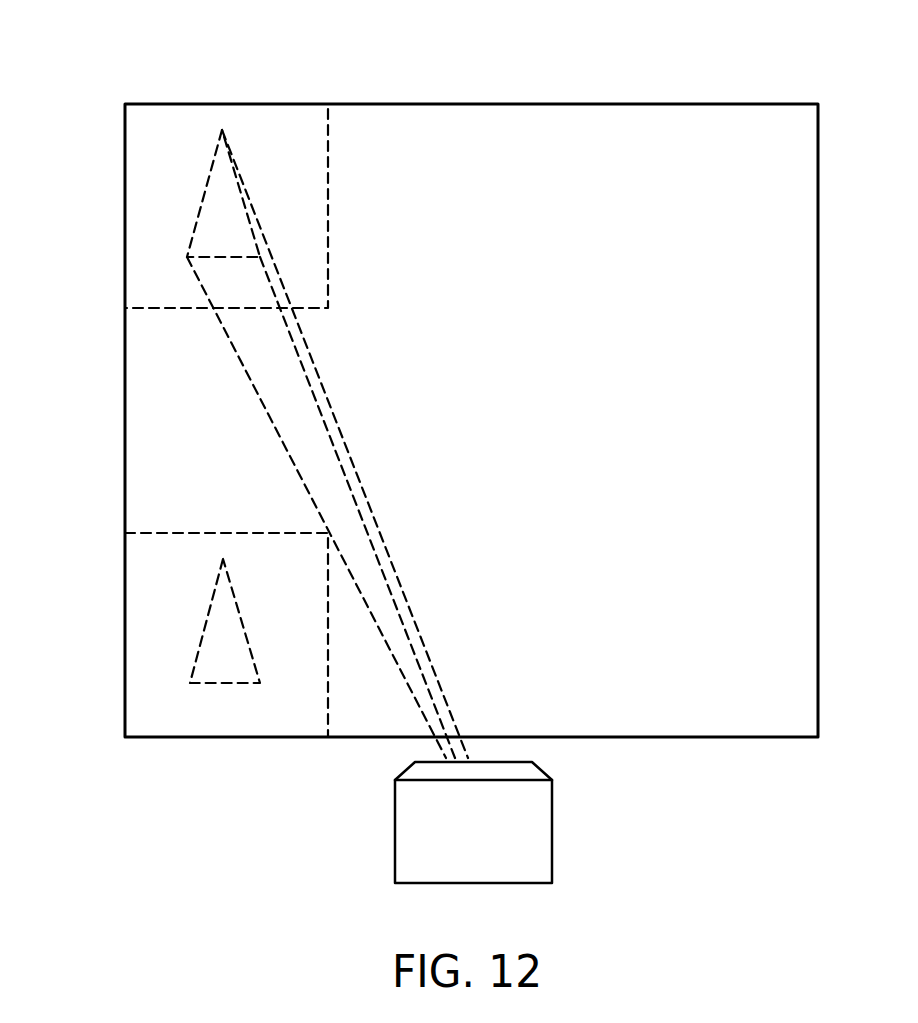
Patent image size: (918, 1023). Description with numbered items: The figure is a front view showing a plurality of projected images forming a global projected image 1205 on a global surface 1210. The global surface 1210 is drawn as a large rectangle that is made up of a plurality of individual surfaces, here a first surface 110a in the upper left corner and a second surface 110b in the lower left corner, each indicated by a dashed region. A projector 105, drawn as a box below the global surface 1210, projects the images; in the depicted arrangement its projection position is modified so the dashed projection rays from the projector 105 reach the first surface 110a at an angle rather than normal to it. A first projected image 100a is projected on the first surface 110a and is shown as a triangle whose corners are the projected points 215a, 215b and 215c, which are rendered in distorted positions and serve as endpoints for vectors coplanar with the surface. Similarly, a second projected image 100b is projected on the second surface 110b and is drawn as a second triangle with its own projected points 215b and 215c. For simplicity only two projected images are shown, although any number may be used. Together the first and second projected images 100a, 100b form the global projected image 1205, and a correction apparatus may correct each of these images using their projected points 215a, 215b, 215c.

The global projected image 1205 is at (430, 475).
The global surface 1210 is at (529, 441).
The first surface 110a is at (193, 195).
The second surface 110b is at (127, 573).
The first projected image 100a is at (198, 170).
The second projected image 100b is at (200, 598).
The projection point 215a is at (187, 255).
The projection point 215b is at (222, 131).
The projection point 215c is at (258, 259).
The projector 105 is at (455, 855).